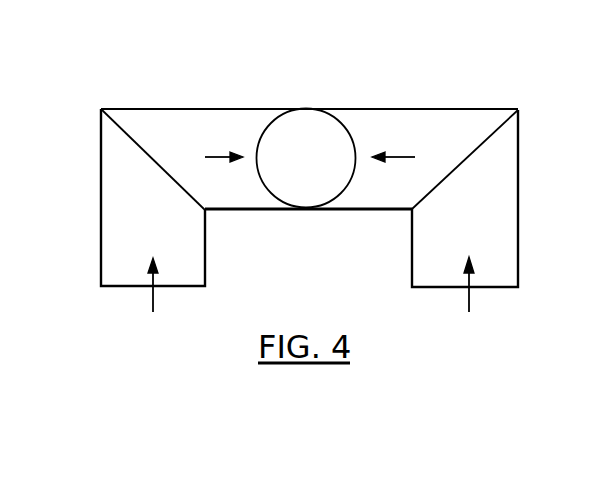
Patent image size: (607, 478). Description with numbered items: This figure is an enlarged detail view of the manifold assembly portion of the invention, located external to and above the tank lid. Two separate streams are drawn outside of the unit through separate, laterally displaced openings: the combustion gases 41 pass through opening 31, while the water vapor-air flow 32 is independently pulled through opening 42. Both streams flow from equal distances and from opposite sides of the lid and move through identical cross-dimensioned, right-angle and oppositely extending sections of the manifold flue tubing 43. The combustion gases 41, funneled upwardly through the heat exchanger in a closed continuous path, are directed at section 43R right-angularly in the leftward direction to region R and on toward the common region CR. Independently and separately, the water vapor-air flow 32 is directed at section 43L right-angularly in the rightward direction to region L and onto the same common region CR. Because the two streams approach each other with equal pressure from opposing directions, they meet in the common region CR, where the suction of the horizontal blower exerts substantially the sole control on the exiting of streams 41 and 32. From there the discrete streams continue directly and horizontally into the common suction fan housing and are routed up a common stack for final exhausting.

The opening 31 is at (512, 245).
The water vapor-air stream 32 is at (152, 293).
The combustion gases stream 41 is at (470, 295).
The opening 42 is at (113, 245).
The manifold flue tubing 43 is at (190, 112).
The left manifold flue tubing section 43L is at (155, 118).
The right manifold flue tubing section 43R is at (473, 118).
The common region CR is at (315, 122).
The region L is at (218, 155).
The region R is at (405, 150).